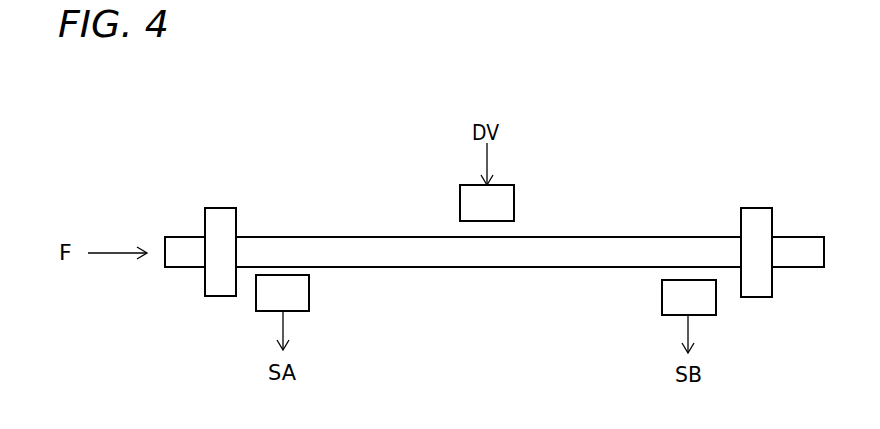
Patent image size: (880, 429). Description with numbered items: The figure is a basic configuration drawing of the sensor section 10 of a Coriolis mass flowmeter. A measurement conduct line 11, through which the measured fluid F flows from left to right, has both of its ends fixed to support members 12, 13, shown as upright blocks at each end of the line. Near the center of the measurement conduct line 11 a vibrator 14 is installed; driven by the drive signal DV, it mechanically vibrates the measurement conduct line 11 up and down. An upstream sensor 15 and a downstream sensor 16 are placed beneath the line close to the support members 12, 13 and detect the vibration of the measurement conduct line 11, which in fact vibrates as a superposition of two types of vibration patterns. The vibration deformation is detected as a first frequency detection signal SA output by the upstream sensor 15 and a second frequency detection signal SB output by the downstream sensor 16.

The sensor section 10 is at (460, 106).
The measurement conduct line 11 is at (445, 260).
The support member 12 is at (220, 217).
The support member 13 is at (758, 218).
The vibrator 14 is at (498, 205).
The upstream sensor 15 is at (303, 303).
The downstream sensor 16 is at (707, 302).